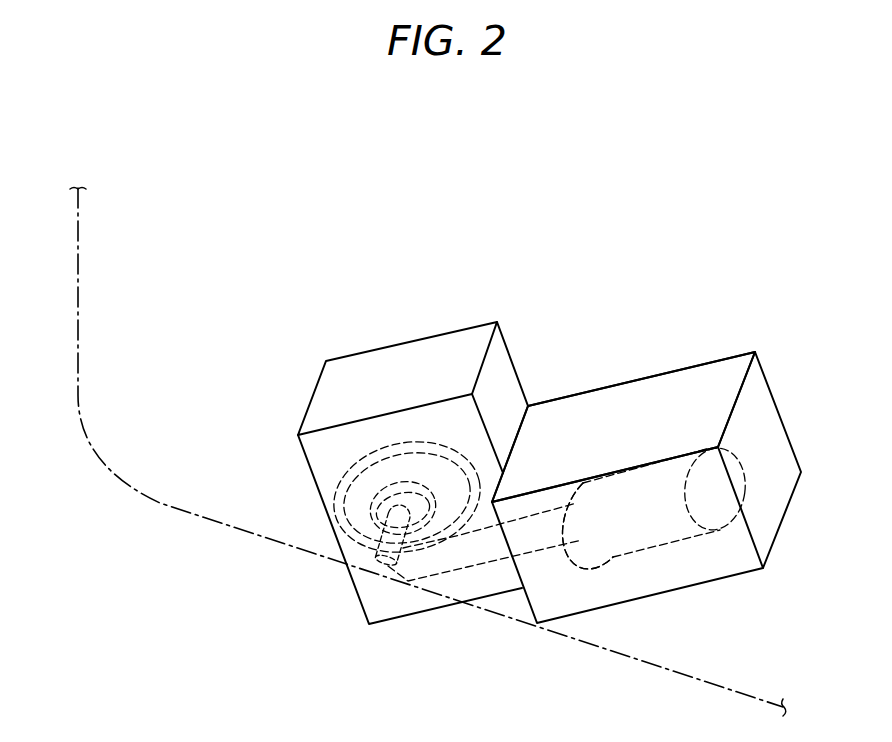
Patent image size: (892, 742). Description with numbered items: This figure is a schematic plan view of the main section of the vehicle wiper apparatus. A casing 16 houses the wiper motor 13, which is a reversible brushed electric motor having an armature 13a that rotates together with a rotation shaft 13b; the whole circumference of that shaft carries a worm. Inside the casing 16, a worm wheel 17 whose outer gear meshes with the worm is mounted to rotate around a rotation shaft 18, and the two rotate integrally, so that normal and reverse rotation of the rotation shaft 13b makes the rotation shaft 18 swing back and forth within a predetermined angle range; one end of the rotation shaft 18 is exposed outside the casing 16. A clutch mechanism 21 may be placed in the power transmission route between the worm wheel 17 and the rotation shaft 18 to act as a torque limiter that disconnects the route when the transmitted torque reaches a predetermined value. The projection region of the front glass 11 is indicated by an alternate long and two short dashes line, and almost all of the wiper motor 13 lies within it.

The front glass 11 is at (157, 518).
The wiper motor 13 is at (564, 444).
The armature 13a is at (633, 492).
The rotation shaft 13b is at (552, 543).
The casing 16 is at (717, 344).
The worm wheel 17 is at (408, 426).
The rotation shaft 18 is at (385, 530).
The clutch mechanism 21 is at (363, 483).